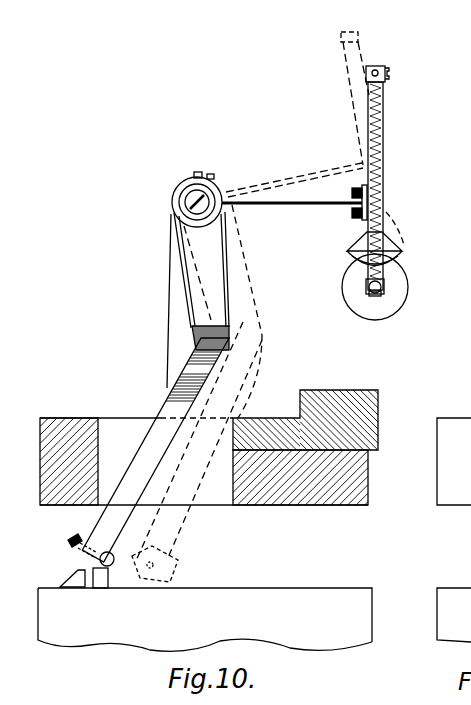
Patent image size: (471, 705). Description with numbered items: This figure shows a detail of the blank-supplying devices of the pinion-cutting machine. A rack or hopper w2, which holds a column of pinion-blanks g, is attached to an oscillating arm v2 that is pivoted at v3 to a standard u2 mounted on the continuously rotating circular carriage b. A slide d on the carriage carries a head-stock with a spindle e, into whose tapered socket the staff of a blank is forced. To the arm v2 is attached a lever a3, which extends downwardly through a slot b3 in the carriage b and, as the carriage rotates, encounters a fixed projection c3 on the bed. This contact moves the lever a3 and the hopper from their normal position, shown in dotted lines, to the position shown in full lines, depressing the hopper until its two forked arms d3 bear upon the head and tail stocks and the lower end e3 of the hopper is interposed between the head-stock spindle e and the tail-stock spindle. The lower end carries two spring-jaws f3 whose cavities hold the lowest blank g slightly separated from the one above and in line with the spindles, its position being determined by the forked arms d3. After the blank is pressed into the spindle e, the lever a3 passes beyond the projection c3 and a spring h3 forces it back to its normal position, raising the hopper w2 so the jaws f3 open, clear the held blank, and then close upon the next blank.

The spring h3 is at (172, 191).
The pivot v3 is at (206, 198).
The oscillating arm v2 is at (290, 182).
The rack or hopper w2 is at (381, 124).
The standard u2 is at (182, 306).
The lever a3 is at (170, 408).
The slot b3 is at (120, 433).
The forked arms d3 is at (357, 252).
The head-stock spindle e is at (388, 287).
The pinion-blank g is at (381, 287).
The lower end of the hopper e3 is at (368, 277).
The spring-jaws f3 is at (372, 294).
The slide d is at (318, 420).
The circular turret or carriage b is at (375, 476).
The fixed projection c3 is at (72, 583).